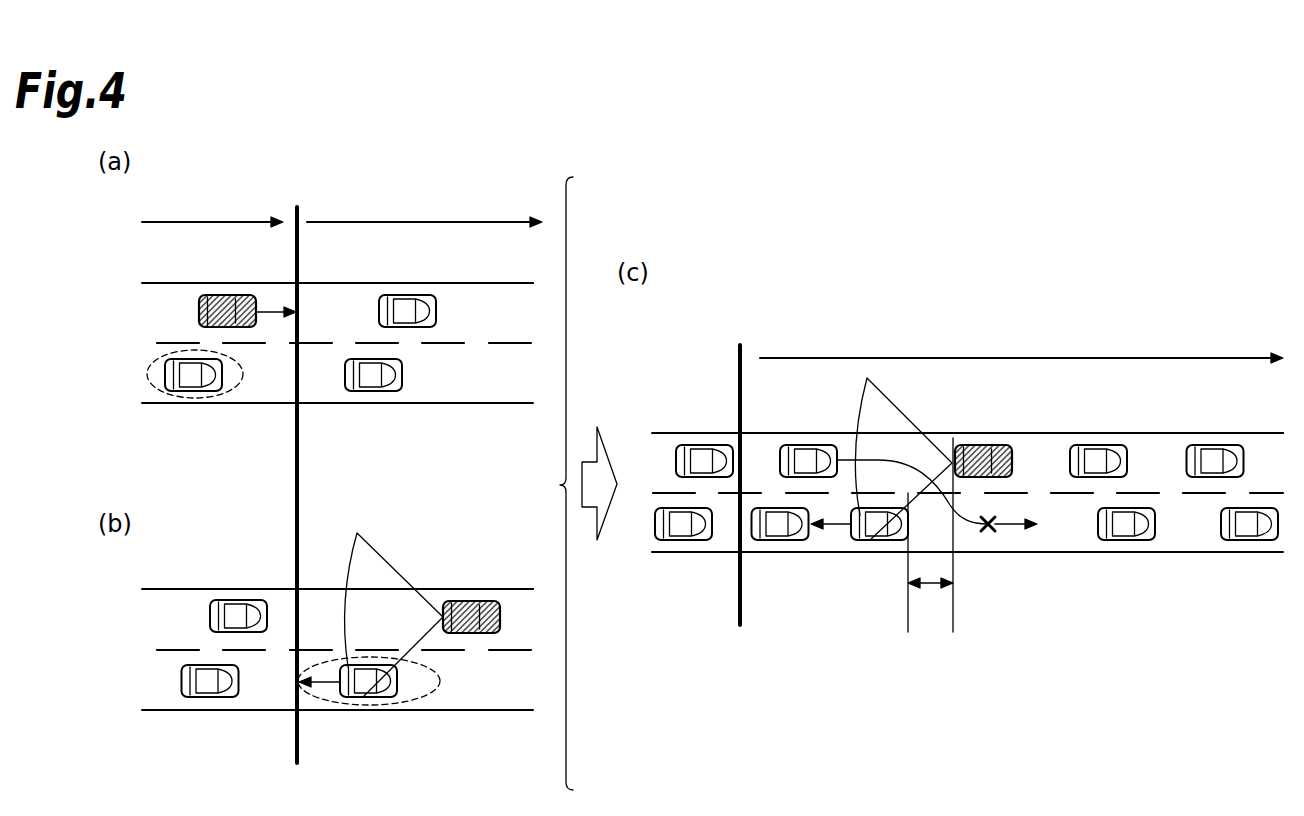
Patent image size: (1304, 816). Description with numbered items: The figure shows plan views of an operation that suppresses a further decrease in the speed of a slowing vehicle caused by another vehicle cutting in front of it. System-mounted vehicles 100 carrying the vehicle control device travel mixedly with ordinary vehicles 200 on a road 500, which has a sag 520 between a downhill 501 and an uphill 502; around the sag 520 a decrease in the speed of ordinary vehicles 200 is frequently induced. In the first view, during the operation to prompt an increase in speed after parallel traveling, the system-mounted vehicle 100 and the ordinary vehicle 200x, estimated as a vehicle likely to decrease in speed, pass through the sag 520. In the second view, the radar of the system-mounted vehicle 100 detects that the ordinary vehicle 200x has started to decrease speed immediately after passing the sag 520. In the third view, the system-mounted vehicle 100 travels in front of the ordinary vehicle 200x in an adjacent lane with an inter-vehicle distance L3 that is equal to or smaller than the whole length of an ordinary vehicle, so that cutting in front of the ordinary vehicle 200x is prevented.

The downhill 501 is at (207, 222).
The uphill 502 is at (465, 222).
The sag 520 is at (297, 248).
The road 500 is at (497, 283).
The system-mounted vehicle 100 is at (223, 293).
The ordinary vehicle 200 is at (812, 443).
The ordinary vehicle 200x is at (193, 393).
The inter-vehicle distance L3 is at (930, 599).